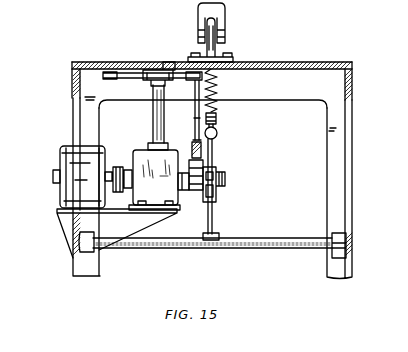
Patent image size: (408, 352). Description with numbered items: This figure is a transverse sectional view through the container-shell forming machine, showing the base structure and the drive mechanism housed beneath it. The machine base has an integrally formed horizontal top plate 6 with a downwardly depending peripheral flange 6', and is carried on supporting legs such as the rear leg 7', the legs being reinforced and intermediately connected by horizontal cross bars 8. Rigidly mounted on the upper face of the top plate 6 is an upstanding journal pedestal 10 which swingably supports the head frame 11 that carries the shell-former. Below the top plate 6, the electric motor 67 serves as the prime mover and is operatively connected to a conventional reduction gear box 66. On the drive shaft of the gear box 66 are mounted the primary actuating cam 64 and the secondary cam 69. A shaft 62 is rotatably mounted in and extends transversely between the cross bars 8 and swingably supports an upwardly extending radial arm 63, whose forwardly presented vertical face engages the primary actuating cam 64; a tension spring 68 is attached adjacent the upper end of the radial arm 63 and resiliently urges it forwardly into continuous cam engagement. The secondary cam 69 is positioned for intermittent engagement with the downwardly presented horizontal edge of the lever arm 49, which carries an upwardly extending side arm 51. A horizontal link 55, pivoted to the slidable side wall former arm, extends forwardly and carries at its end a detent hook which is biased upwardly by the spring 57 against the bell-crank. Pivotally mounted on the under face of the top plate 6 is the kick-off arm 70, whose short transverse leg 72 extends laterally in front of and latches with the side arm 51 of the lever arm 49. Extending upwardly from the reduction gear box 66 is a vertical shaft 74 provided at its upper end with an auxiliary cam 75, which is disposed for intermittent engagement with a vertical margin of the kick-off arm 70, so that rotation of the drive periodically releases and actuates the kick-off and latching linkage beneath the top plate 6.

The horizontal top plate 6 is at (212, 53).
The downwardly depending peripheral flange 6' is at (211, 92).
The rear supporting leg 7' is at (209, 192).
The horizontal cross bar 8 is at (68, 240).
The journal pedestal 10 is at (214, 47).
The head frame 11 is at (226, 13).
The lever arm 49 is at (192, 149).
The upwardly extending side arm 51 is at (194, 118).
The horizontal link 55 is at (217, 119).
The spring 57 is at (312, 82).
The shaft 62 is at (243, 248).
The radial arm 63 is at (213, 221).
The primary actuating cam 64 is at (226, 188).
The reduction gear box 66 is at (138, 150).
The electric motor 67 is at (70, 147).
The tension spring 68 is at (218, 134).
The secondary cam 69 is at (213, 160).
The kick-off arm 70 is at (106, 77).
The short transverse leg 72 is at (191, 81).
The vertical shaft 74 is at (152, 113).
The auxiliary cam 75 is at (163, 70).